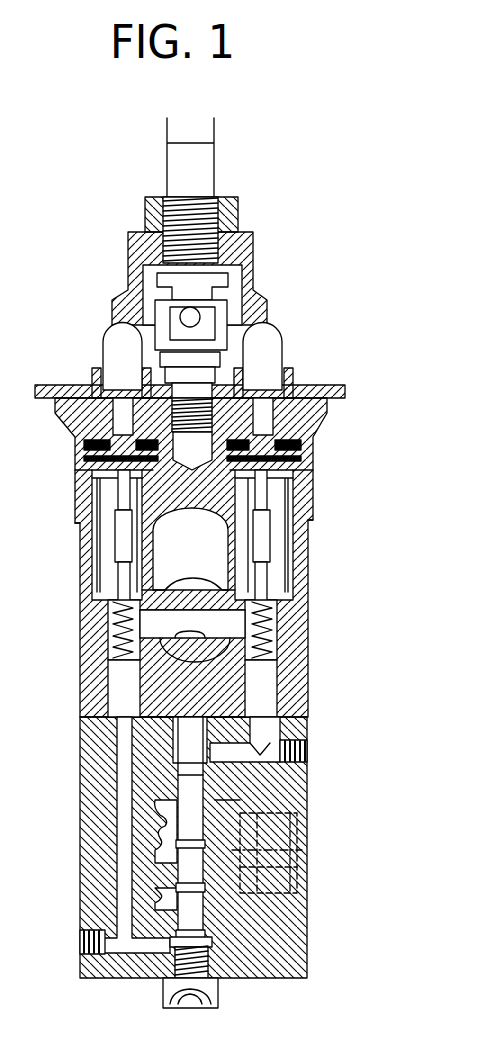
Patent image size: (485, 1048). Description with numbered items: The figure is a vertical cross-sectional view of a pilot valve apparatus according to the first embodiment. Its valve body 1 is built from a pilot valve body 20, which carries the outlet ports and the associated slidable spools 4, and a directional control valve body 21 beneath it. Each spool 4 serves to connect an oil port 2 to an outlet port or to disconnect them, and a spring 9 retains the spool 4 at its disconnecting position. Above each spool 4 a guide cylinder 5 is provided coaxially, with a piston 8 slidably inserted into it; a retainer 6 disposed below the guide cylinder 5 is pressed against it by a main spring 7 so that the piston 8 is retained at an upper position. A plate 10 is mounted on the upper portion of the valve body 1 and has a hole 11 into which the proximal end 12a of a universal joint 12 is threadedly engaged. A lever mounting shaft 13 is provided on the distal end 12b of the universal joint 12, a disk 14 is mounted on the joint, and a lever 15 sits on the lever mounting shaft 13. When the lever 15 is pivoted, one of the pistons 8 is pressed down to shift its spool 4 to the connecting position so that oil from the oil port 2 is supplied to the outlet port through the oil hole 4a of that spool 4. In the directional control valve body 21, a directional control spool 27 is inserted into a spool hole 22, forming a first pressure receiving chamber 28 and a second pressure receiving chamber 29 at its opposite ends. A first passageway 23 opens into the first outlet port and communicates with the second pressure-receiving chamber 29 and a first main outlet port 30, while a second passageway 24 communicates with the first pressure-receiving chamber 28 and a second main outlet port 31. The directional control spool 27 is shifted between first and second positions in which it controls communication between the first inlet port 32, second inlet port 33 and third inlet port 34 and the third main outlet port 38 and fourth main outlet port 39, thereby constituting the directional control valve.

The valve body 1 is at (312, 555).
The oil port 2 is at (162, 607).
The spool 4 is at (120, 578).
The oil hole 4a is at (107, 640).
The guide cylinder 5 is at (322, 412).
The retainer 6 is at (310, 465).
The main spring 7 is at (305, 493).
The piston 8 is at (268, 337).
The spring 9 is at (243, 558).
The plate 10 is at (333, 385).
The hole 11 is at (143, 390).
The universal joint 12 is at (200, 318).
The proximal end 12a is at (187, 508).
The distal end 12b is at (200, 297).
The lever mounting shaft 13 is at (238, 212).
The disk 14 is at (123, 303).
The lever 15 is at (214, 132).
The pilot valve body 20 is at (305, 603).
The directional control valve body 21 is at (298, 790).
The spool hole 22 is at (200, 795).
The first passageway 23 is at (120, 778).
The second passageway 24 is at (267, 737).
The directional control spool 27 is at (245, 812).
The first pressure-receiving chamber 28 is at (190, 722).
The second pressure-receiving chamber 29 is at (272, 950).
The first main outlet port 30 is at (85, 952).
The second main outlet port 31 is at (297, 753).
The first inlet port 32 is at (174, 843).
The second inlet port 33 is at (175, 803).
The third inlet port 34 is at (177, 905).
The third main outlet port 38 is at (287, 890).
The fourth main outlet port 39 is at (293, 818).